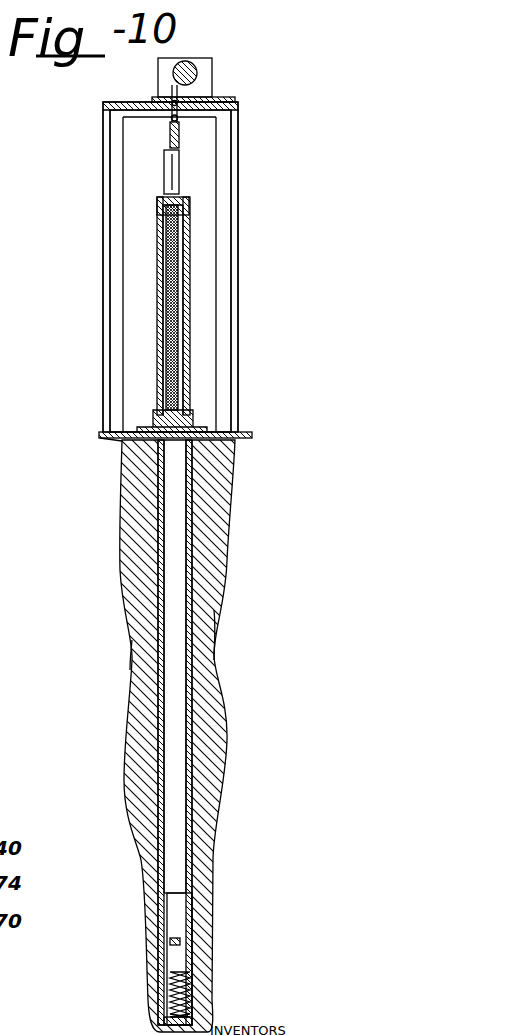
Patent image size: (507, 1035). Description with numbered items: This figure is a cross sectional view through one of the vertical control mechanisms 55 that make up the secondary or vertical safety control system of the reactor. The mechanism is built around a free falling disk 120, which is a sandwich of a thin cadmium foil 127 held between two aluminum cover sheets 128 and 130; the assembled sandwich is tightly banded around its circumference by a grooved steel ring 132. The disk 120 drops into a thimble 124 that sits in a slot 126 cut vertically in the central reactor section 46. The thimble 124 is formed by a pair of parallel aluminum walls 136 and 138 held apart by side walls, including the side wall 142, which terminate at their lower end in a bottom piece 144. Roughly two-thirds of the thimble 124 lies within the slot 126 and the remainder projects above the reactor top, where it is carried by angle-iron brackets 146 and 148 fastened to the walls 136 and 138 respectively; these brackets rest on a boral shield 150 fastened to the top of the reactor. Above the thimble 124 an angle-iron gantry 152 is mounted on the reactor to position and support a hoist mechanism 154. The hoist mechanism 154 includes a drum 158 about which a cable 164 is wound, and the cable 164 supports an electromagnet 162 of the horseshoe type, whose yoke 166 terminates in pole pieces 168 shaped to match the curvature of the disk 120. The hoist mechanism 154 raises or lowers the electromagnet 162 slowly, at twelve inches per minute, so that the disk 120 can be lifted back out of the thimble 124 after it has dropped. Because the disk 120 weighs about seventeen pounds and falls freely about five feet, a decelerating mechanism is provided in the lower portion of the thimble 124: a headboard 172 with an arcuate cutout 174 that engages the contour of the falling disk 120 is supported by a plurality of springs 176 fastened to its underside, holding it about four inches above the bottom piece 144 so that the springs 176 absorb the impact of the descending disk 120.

The vertical control mechanism 55 is at (264, 42).
The hoist mechanism 154 is at (214, 82).
The drum 158 is at (195, 66).
The cable 164 is at (172, 87).
The yoke 166 is at (179, 122).
The electromagnet 162 is at (181, 163).
The pole piece 168 is at (178, 197).
The angle-iron gantry 152 is at (100, 217).
The aluminum cover sheet 130 is at (187, 250).
The aluminum cover sheet 128 is at (166, 299).
The free falling disk 120 is at (186, 322).
The cadmium foil 127 is at (170, 338).
The steel ring 132 is at (196, 411).
The angle-iron bracket 146 is at (207, 428).
The angle-iron bracket 148 is at (150, 414).
The boral shield 150 is at (106, 440).
The slot 126 is at (187, 505).
The thimble 124 is at (190, 552).
The central reactor section 46 is at (212, 587).
The thimble wall 136 is at (190, 633).
The thimble wall 138 is at (165, 667).
The side wall 142 is at (176, 777).
The arcuate cutout 174 is at (170, 943).
The headboard 172 is at (180, 960).
The spring 176 is at (190, 987).
The bottom piece 144 is at (172, 1025).